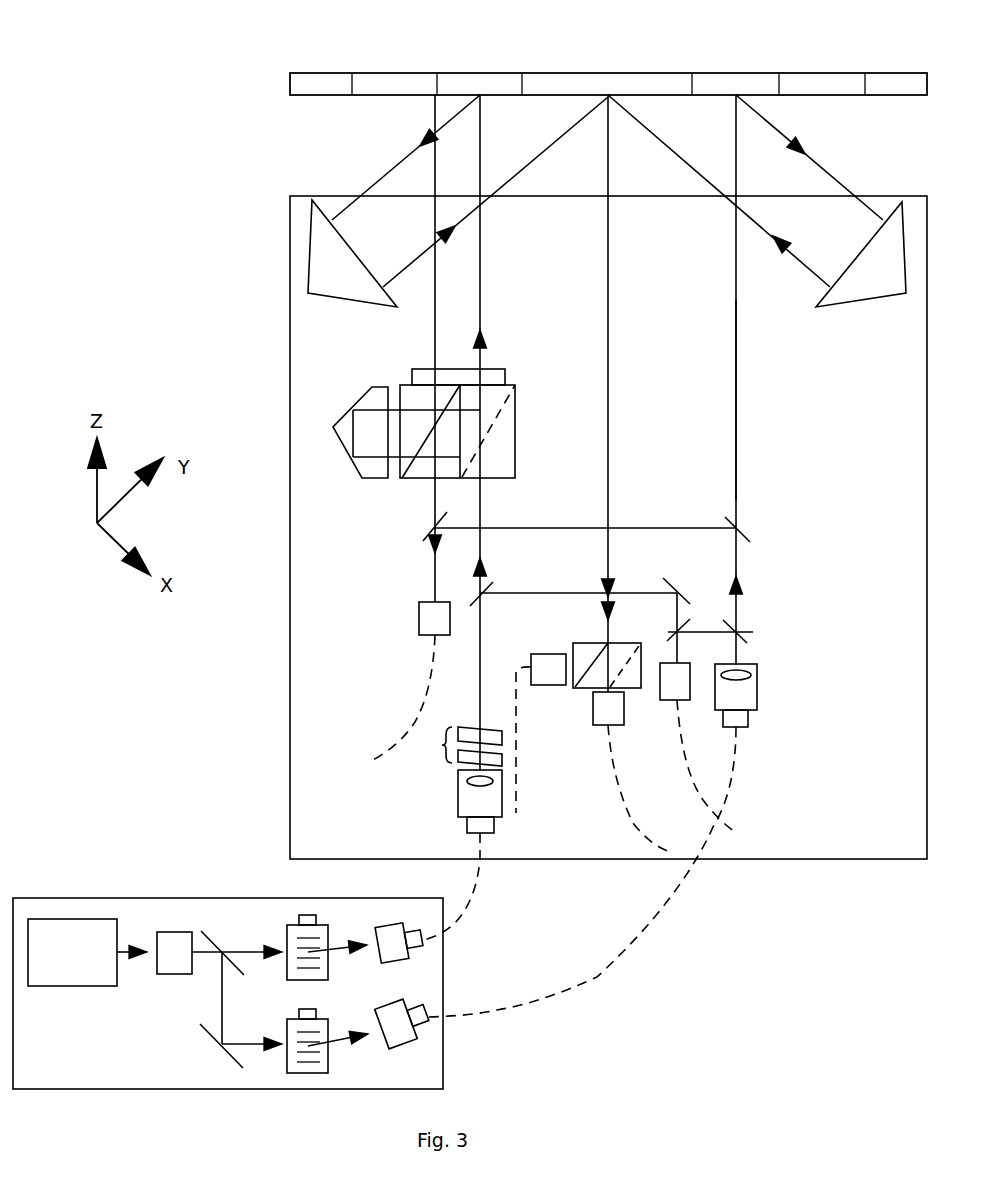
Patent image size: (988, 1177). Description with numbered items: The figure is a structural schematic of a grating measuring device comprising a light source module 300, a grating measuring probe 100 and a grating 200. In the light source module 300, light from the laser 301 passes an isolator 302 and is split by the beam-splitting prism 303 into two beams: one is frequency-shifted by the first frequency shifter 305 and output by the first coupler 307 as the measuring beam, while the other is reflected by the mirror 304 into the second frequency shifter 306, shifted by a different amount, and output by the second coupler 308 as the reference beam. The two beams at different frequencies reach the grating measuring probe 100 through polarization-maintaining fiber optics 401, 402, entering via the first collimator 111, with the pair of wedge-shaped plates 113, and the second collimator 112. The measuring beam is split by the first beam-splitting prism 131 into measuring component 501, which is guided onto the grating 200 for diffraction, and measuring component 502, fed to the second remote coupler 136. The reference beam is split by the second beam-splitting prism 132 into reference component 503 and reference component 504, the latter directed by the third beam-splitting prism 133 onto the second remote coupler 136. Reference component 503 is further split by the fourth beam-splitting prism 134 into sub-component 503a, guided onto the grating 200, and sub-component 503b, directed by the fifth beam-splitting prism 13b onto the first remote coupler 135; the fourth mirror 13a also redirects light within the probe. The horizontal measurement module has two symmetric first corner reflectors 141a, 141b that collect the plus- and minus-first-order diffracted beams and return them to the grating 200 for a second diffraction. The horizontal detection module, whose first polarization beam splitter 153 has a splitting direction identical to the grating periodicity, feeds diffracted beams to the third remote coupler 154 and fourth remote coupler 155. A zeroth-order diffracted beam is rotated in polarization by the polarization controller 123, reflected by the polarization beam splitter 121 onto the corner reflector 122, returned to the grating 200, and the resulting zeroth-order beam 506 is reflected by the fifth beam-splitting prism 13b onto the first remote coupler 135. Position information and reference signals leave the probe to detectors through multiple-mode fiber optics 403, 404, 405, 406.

The grating 200 is at (290, 76).
The grating measuring probe 100 is at (290, 663).
The first corner reflector 141a is at (372, 304).
The first corner reflector 141b is at (878, 298).
The polarization controller 123 is at (425, 375).
The corner reflector 122 is at (362, 466).
The polarization beam splitter 121 is at (424, 481).
The light beam 506 is at (437, 503).
The light beam 501 is at (482, 513).
The light beam 503 is at (738, 562).
The light beam 503a is at (737, 428).
The light beam 503b is at (661, 529).
The light beam 502 is at (520, 596).
The light beam 504 is at (713, 633).
The fifth beam-splitting prism 13b is at (425, 531).
The fourth mirror 13a is at (684, 603).
The fourth beam-splitting prism 134 is at (741, 527).
The first beam-splitting prism 131 is at (486, 581).
The third beam-splitting prism 133 is at (672, 632).
The second beam-splitting prism 132 is at (750, 636).
The first remote coupler 135 is at (419, 619).
The multiple-mode fiber optic 403 is at (425, 690).
The first polarization beam splitter 153 is at (592, 653).
The third remote coupler 154 is at (556, 682).
The fourth remote coupler 155 is at (596, 727).
The second remote coupler 136 is at (668, 700).
The second collimator 112 is at (760, 700).
The pair of wedge-shaped plates 113 is at (442, 745).
The first collimator 111 is at (465, 805).
The multiple-mode fiber optic 405 is at (518, 790).
The multiple-mode fiber optic 406 is at (632, 801).
The multiple-mode fiber optic 404 is at (697, 785).
The polarization-maintaining fiber optic 401 is at (470, 897).
The polarization-maintaining fiber optic 402 is at (573, 983).
The light source module 300 is at (135, 910).
The laser 301 is at (77, 970).
The isolator 302 is at (170, 963).
The beam-splitting prism 303 is at (218, 940).
The mirror 304 is at (210, 1036).
The first frequency shifter 305 is at (290, 932).
The second frequency shifter 306 is at (326, 1059).
The first coupler 307 is at (385, 931).
The second coupler 308 is at (408, 1033).